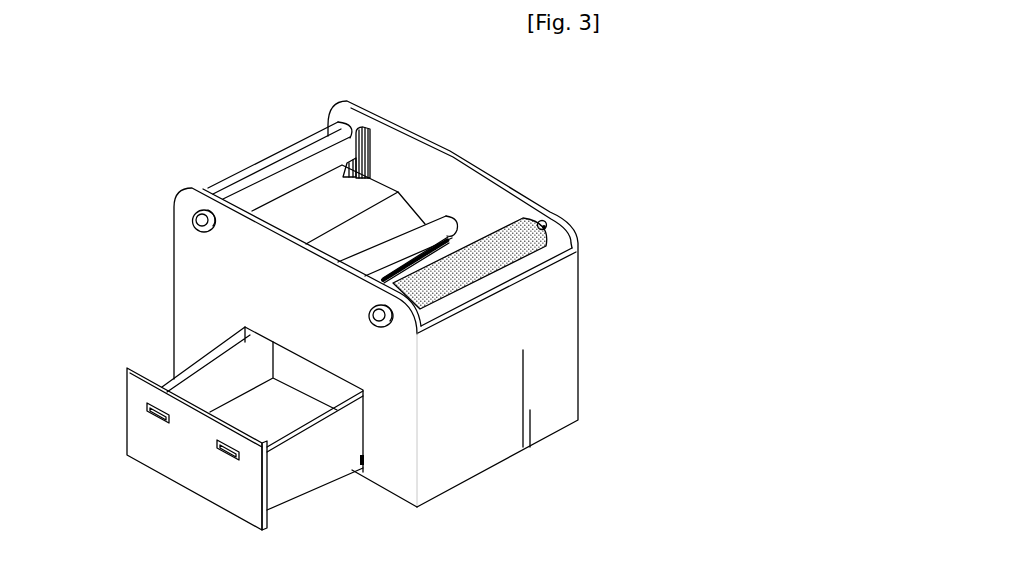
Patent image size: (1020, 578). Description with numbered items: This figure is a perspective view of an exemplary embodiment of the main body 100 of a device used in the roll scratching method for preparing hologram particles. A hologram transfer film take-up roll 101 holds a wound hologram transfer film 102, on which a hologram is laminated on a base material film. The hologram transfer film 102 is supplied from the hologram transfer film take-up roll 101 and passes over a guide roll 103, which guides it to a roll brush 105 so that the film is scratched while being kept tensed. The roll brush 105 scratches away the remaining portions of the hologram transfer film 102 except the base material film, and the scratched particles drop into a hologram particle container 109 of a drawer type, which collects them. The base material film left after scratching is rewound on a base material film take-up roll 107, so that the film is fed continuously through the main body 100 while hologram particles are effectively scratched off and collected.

The main body 100 is at (521, 120).
The hologram transfer film take-up roll 101 is at (548, 221).
The hologram transfer film 102 is at (557, 243).
The guide roll 103 is at (430, 226).
The roll brush 105 is at (463, 244).
The base material film take-up roll 107 is at (287, 178).
The hologram particle container 109 is at (193, 477).